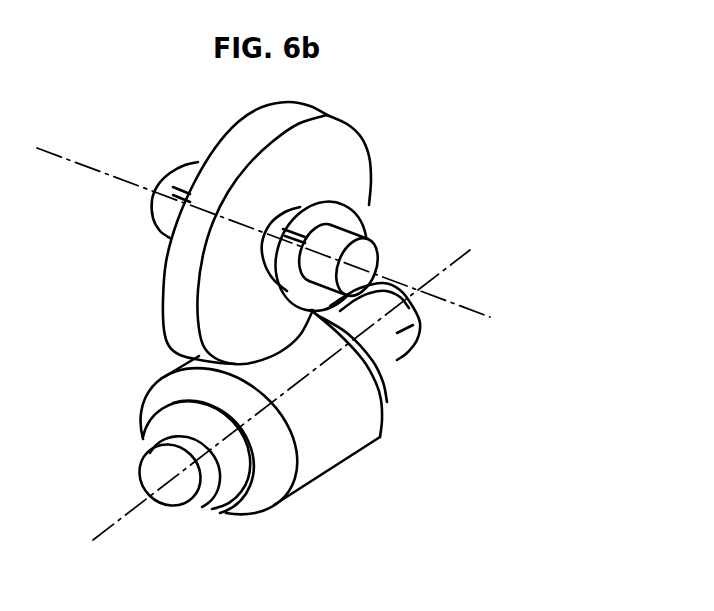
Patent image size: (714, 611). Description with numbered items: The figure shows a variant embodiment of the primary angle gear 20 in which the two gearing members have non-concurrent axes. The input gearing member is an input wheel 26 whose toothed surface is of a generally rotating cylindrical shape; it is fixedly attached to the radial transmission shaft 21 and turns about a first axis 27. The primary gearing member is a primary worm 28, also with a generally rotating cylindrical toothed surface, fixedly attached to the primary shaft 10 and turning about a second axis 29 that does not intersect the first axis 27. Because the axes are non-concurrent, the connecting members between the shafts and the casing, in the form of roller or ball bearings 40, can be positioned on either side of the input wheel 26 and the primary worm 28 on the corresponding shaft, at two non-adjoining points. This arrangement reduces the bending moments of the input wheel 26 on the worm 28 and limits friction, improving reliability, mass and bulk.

The primary shaft 10 is at (398, 333).
The primary angle gear 20 is at (529, 266).
The radial transmission shaft 21 is at (370, 260).
The input wheel 26 is at (342, 163).
The axis 27 is at (50, 152).
The primary worm 28 is at (326, 445).
The axis 29 is at (110, 523).
The roller or ball bearings 40 is at (195, 173).